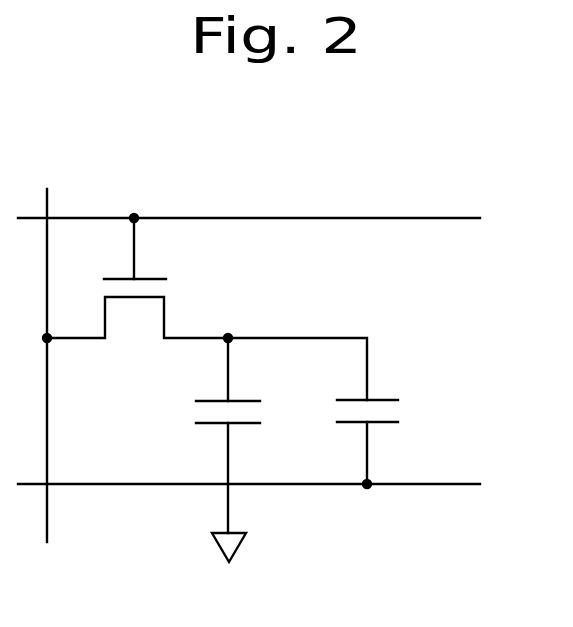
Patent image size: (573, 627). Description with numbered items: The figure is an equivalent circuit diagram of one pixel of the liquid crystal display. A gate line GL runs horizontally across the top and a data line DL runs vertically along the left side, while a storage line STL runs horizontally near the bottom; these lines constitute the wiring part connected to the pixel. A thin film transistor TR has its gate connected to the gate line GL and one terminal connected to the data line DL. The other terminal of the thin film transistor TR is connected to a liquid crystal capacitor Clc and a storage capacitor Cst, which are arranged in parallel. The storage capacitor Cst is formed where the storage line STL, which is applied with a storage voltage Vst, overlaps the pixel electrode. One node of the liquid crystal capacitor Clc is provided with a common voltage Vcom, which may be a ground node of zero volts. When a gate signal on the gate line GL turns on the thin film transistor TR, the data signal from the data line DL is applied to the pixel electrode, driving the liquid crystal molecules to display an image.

The gate line GL is at (263, 219).
The data line DL is at (46, 382).
The storage line STL is at (270, 486).
The thin film transistor TR is at (174, 294).
The liquid crystal capacitor Clc is at (249, 409).
The storage capacitor Cst is at (333, 411).
The storage voltage Vst is at (365, 498).
The common voltage Vcom is at (229, 539).